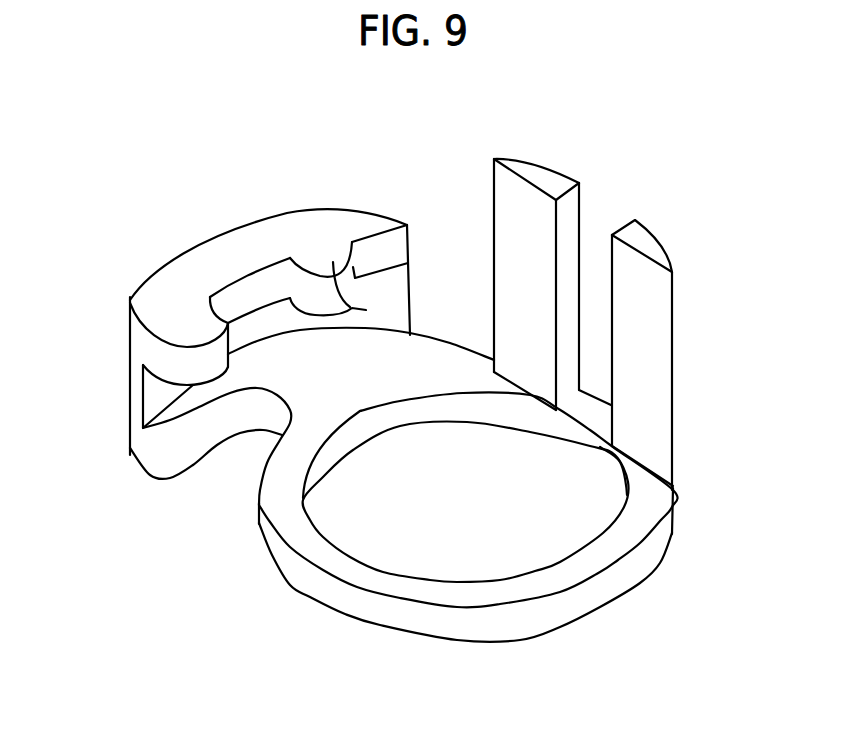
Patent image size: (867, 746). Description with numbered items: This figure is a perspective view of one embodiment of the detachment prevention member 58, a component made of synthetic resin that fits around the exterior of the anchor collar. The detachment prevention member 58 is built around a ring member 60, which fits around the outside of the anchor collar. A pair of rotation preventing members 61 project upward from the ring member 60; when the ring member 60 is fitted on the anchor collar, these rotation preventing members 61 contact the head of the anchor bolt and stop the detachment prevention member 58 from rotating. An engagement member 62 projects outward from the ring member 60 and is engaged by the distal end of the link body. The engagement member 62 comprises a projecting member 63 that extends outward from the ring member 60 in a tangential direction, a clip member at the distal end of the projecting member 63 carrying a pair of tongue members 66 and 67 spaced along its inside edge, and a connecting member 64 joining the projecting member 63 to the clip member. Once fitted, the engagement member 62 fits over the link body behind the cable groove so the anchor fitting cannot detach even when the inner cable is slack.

The detachment prevention member 58 is at (662, 584).
The ring member 60 is at (415, 592).
The rotation preventing members 61 is at (662, 328).
The engagement member 62 is at (348, 199).
The projecting member 63 is at (170, 422).
The connecting member 64 is at (130, 395).
The tongue member 66 is at (215, 257).
The tongue member 67 is at (342, 284).